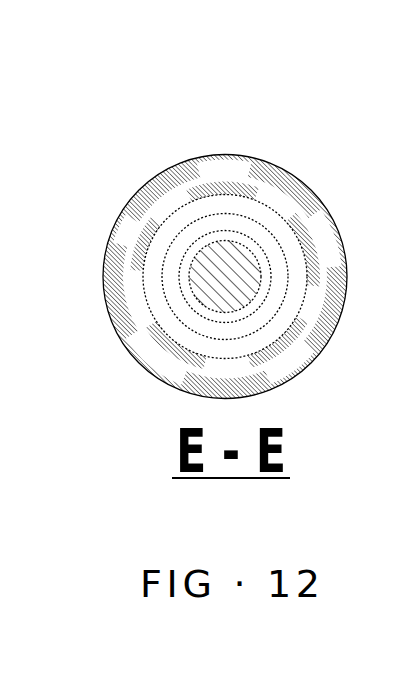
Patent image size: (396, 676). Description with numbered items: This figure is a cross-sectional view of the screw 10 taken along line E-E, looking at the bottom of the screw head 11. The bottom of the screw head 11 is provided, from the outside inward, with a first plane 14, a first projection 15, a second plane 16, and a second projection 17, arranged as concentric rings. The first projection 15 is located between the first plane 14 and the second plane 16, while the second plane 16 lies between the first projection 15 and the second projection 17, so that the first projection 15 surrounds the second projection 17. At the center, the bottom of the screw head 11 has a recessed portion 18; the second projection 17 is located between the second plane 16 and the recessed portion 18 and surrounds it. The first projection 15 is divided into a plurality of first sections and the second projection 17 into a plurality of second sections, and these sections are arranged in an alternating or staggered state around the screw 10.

The screw 10 is at (228, 126).
The screw head 11 is at (155, 378).
The first plane 14 is at (166, 186).
The first projection 15 is at (174, 178).
The second plane 16 is at (280, 197).
The second projection 17 is at (305, 243).
The recessed portion 18 is at (190, 272).